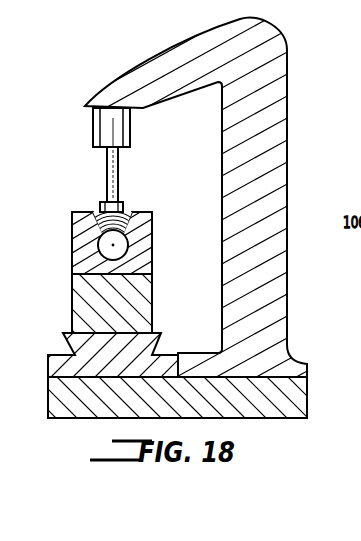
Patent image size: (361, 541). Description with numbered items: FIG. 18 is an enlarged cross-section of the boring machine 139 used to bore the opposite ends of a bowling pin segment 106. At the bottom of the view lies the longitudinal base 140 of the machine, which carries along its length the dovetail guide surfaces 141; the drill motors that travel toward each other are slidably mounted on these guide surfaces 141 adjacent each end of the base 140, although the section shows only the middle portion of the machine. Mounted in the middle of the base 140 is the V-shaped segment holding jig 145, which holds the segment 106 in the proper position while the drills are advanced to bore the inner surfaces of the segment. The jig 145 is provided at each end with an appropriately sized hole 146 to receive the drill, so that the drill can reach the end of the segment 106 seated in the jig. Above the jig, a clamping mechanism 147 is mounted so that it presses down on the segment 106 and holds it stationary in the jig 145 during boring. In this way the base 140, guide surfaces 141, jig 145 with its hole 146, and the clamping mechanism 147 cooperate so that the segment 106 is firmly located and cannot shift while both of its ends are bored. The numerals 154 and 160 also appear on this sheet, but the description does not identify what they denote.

The boring machine 139 is at (288, 87).
The longitudinal base 140 is at (80, 408).
The dovetail guide surfaces 141 is at (64, 343).
The V-shaped segment holding jig 145 is at (143, 257).
The hole 146 is at (120, 241).
The clamping mechanism 147 is at (98, 137).
The segment 106 is at (126, 212).
The adjacent figure element (cut off) 154 is at (352, 297).
The adjacent figure element (cut off) 160 is at (360, 455).